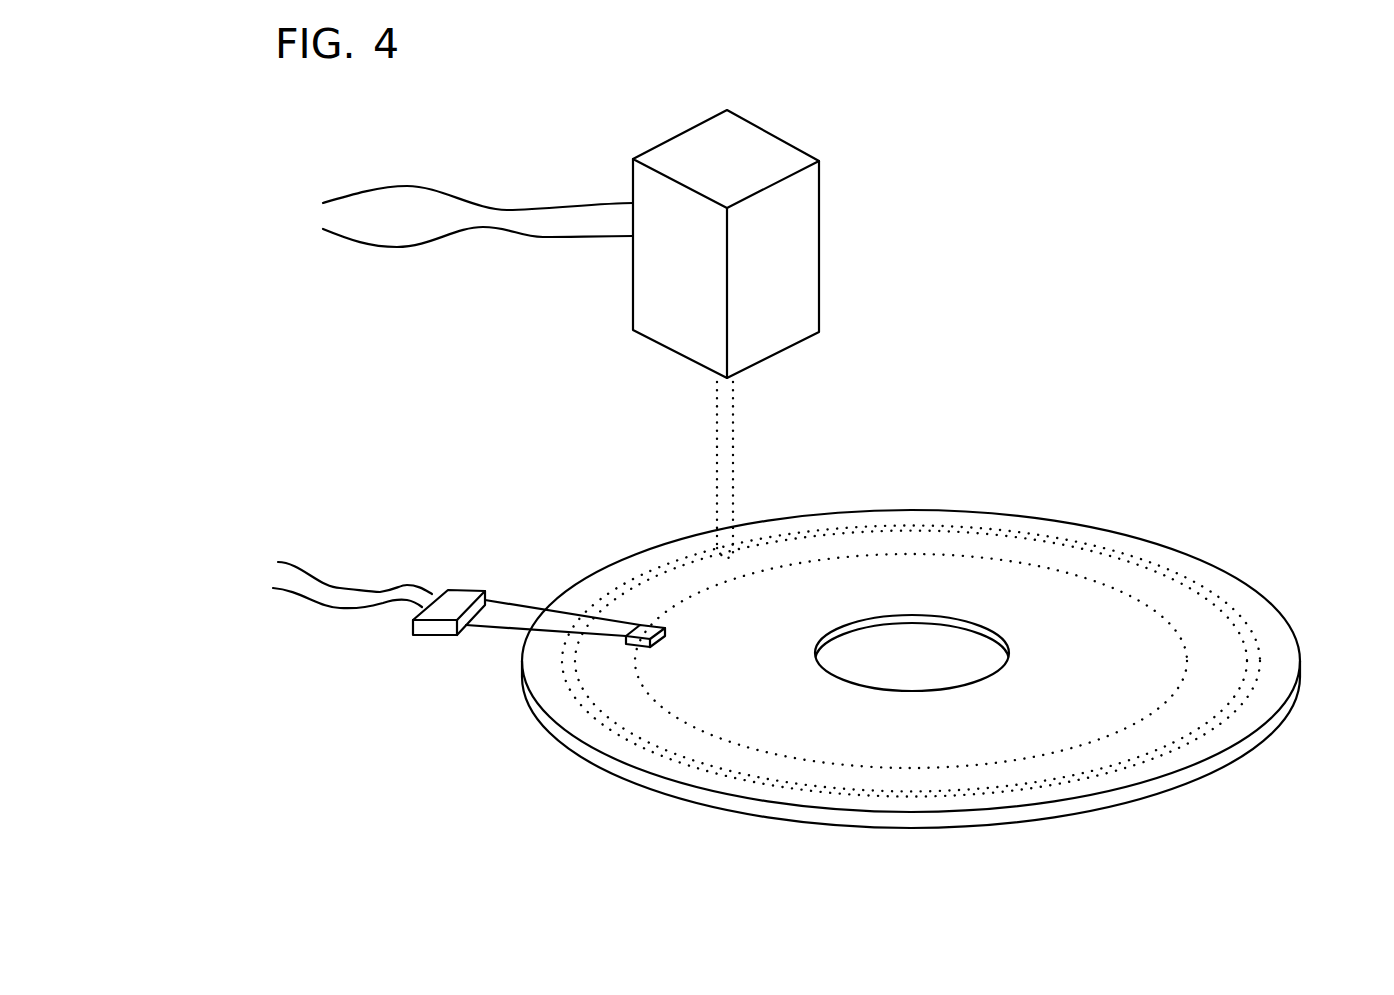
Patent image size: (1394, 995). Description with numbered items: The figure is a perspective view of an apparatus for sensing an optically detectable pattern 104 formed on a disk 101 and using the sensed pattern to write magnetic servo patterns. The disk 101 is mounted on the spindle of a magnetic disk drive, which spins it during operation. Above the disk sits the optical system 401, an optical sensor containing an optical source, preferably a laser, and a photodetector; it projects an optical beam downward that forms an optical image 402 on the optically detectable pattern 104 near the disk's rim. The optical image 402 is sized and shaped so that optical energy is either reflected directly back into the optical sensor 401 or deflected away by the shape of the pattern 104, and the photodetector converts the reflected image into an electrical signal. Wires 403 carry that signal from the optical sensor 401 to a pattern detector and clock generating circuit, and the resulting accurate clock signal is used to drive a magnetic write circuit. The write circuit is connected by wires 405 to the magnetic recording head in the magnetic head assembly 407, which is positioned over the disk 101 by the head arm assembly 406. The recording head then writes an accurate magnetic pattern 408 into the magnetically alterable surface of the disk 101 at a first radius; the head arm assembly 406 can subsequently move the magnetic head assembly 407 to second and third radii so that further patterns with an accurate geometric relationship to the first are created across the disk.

The disk 101 is at (1067, 520).
The optically detectable pattern 104 is at (1245, 630).
The optical system 401 is at (827, 183).
The optical image 402 is at (712, 542).
The wires 403 is at (318, 215).
The wires 405 is at (275, 577).
The head arm assembly 406 is at (465, 583).
The magnetic head assembly 407 is at (665, 627).
The magnetic pattern 408 is at (1183, 675).